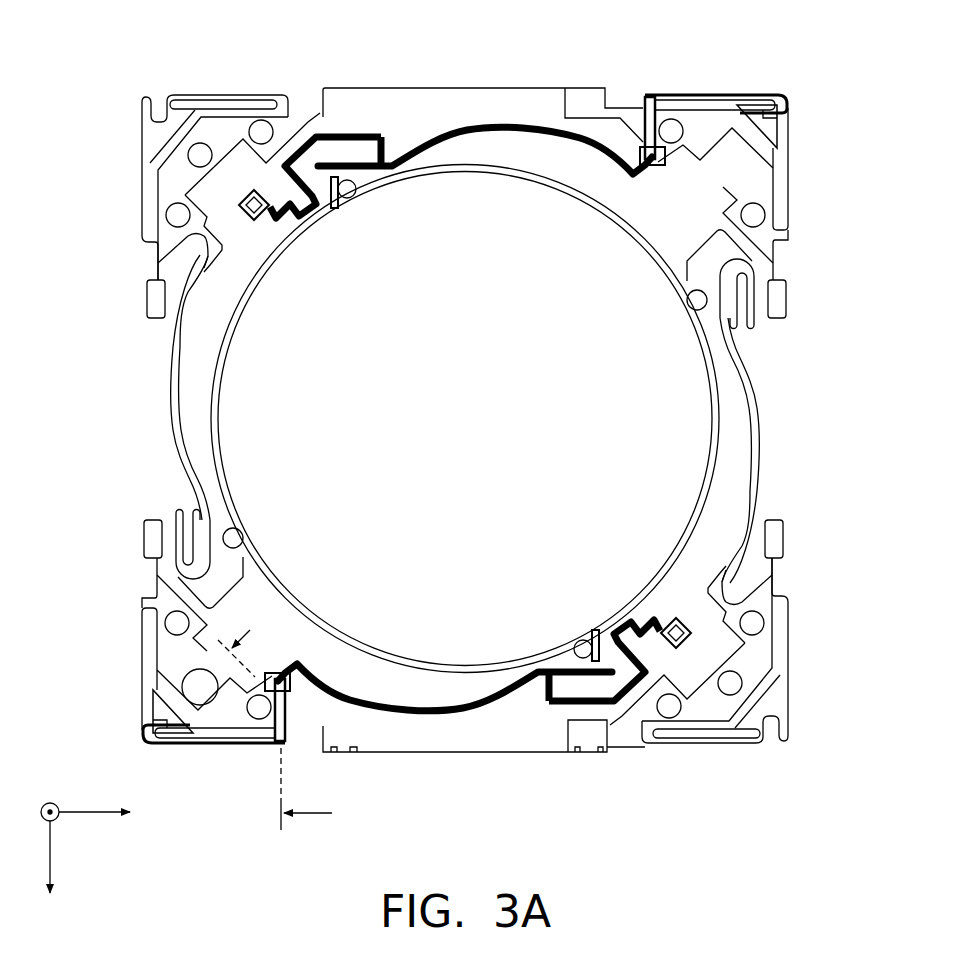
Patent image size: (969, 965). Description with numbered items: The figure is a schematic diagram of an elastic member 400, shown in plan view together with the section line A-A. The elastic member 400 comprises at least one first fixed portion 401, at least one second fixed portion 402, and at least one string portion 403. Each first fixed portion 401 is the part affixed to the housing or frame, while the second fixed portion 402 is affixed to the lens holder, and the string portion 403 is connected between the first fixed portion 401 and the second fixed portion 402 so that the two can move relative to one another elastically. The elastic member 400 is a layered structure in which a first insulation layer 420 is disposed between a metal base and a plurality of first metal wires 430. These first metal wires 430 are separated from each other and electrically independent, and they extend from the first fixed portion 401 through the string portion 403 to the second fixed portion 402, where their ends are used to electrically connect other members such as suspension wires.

The elastic member 400 is at (92, 40).
The first fixed portion 401 is at (794, 228).
The second fixed portion 402 is at (466, 174).
The string portion 403 is at (464, 126).
The first insulation layer 420 is at (583, 738).
The first metal wire 430 is at (768, 114).